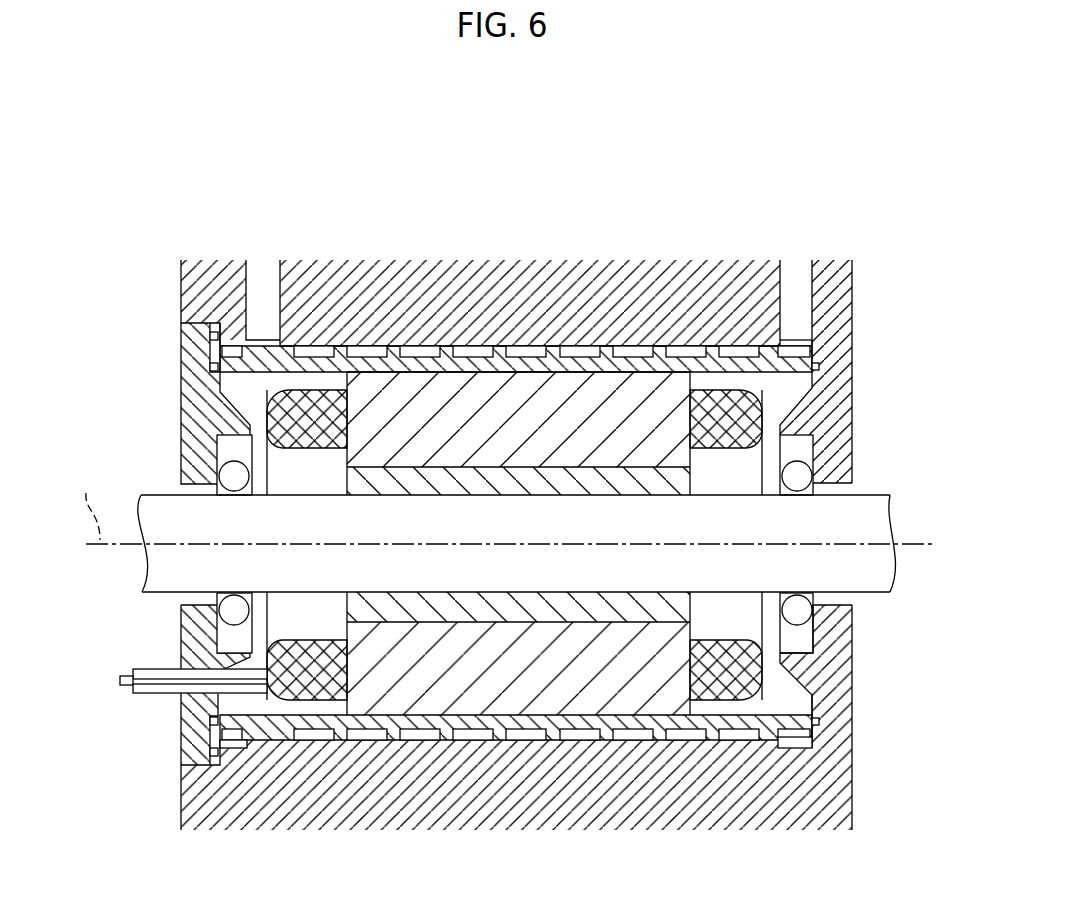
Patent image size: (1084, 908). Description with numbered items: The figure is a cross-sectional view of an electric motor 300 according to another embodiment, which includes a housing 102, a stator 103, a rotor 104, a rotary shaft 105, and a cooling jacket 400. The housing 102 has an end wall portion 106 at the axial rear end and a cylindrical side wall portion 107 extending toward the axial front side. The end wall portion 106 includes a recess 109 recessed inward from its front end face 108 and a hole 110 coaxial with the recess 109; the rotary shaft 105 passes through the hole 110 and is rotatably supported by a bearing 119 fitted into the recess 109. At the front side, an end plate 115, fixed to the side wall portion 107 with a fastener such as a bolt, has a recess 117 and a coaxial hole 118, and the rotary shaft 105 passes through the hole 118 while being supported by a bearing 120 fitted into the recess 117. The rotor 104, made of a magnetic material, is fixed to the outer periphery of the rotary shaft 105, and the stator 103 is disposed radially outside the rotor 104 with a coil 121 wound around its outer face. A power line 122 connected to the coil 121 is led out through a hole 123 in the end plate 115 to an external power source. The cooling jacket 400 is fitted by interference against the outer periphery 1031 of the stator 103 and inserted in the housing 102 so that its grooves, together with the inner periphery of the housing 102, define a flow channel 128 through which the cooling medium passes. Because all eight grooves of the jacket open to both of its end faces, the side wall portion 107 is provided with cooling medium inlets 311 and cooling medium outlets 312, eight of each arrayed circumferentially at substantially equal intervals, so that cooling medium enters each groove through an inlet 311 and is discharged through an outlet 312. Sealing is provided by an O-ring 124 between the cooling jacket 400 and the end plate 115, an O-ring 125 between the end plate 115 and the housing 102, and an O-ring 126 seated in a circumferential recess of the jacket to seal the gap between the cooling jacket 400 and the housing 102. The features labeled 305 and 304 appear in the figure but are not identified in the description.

The electric motor 300 is at (767, 160).
The housing 102 is at (856, 356).
The end wall portion 106 is at (833, 687).
The side wall portion 107 is at (635, 303).
The end cap 305 is at (262, 350).
The cooling medium inlet 311 is at (260, 336).
The cooling medium outlet 312 is at (803, 283).
The flow channel 128 is at (388, 729).
The stator 103 is at (392, 388).
The outer periphery of the stator 1031 is at (477, 373).
The rotor 104 is at (440, 480).
The coil 121 is at (310, 405).
The rotary shaft 105 is at (141, 493).
The end plate 115 is at (198, 346).
The recess 117 is at (222, 396).
The hole 118 is at (196, 603).
The bearing 120 is at (218, 437).
The recess 109 is at (803, 440).
The hole 110 is at (830, 487).
The bearing 119 is at (820, 628).
The end face 108 is at (820, 708).
The power line 122 is at (162, 661).
The hole 123 is at (200, 691).
The O-ring 124 is at (210, 367).
The O-ring 125 is at (183, 322).
The O-ring 126 is at (818, 365).
The spacer 304 is at (802, 746).
The cooling jacket 400 is at (268, 740).